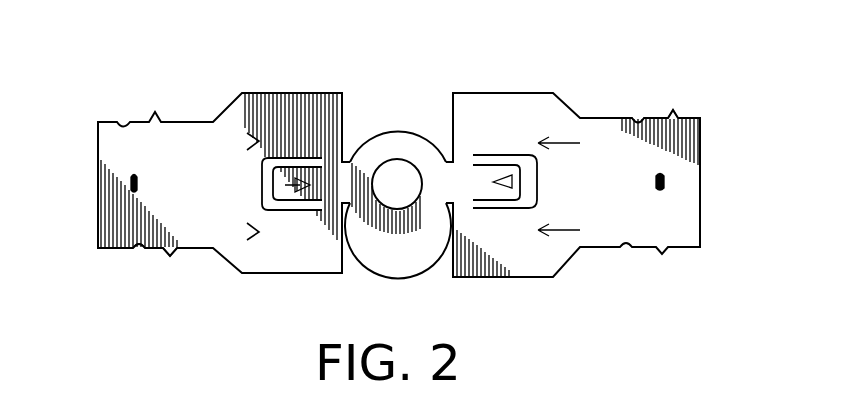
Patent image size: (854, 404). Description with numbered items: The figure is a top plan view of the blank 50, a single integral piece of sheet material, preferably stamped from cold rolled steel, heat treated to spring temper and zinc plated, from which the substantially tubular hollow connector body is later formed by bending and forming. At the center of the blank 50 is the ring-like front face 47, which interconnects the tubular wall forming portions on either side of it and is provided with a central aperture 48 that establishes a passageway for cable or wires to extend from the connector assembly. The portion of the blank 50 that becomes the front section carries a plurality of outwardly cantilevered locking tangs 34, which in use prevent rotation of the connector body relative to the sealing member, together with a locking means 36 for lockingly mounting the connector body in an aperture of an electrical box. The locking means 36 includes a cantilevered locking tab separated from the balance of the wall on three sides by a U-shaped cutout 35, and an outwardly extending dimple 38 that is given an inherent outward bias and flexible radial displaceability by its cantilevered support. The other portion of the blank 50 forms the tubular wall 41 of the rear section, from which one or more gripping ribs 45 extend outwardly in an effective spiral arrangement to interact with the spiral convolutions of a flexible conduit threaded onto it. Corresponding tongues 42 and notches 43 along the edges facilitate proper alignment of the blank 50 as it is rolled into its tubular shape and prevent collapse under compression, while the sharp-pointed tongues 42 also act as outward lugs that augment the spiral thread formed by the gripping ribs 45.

The locking tangs 34 is at (574, 184).
The U-shaped cutout 35 is at (519, 195).
The locking means 36 is at (490, 219).
The dimple 38 is at (508, 176).
The tubular wall 41 is at (205, 128).
The tongues 42 is at (168, 254).
The notches 43 is at (141, 250).
The gripping ribs 45 is at (132, 181).
The front face 47 is at (378, 138).
The central aperture 48 is at (395, 172).
The blank 50 is at (340, 89).